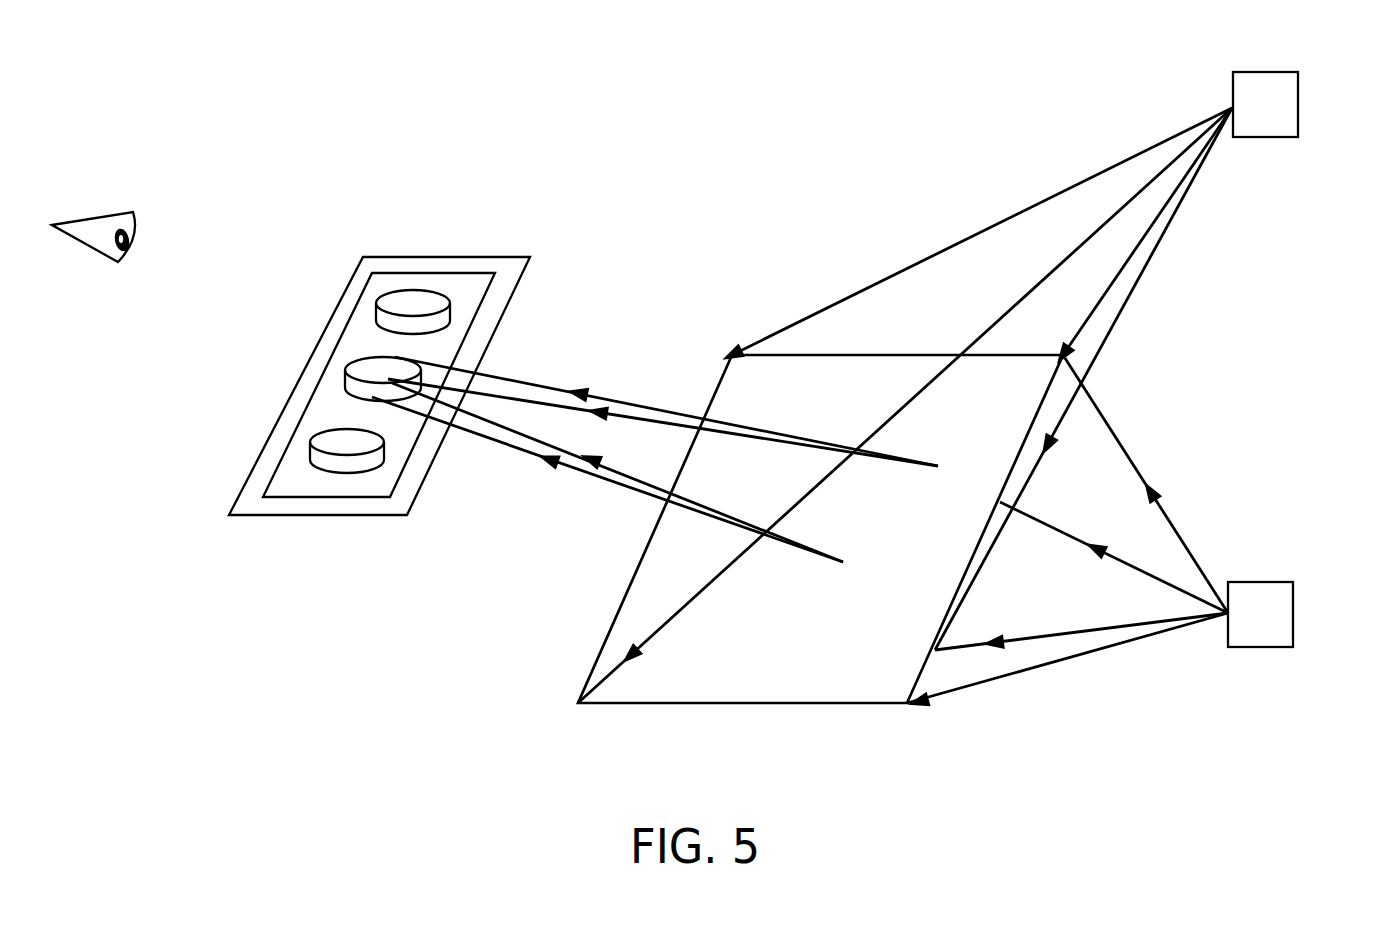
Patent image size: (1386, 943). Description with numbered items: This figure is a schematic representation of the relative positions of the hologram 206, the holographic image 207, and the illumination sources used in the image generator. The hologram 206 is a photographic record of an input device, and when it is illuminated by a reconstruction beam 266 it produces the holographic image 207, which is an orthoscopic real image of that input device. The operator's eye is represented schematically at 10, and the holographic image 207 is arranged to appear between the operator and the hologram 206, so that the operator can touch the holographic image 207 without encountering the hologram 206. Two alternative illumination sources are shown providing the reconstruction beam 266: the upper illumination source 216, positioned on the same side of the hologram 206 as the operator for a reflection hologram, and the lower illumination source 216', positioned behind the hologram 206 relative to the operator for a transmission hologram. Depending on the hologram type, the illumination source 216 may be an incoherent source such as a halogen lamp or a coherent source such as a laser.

The operator's eye 10 is at (93, 207).
The holographic image 207 is at (422, 265).
The hologram 206 is at (680, 705).
The upper illumination source 216 is at (1294, 81).
The lower illumination source 216' is at (1296, 590).
The reconstruction beam 266 is at (1162, 237).